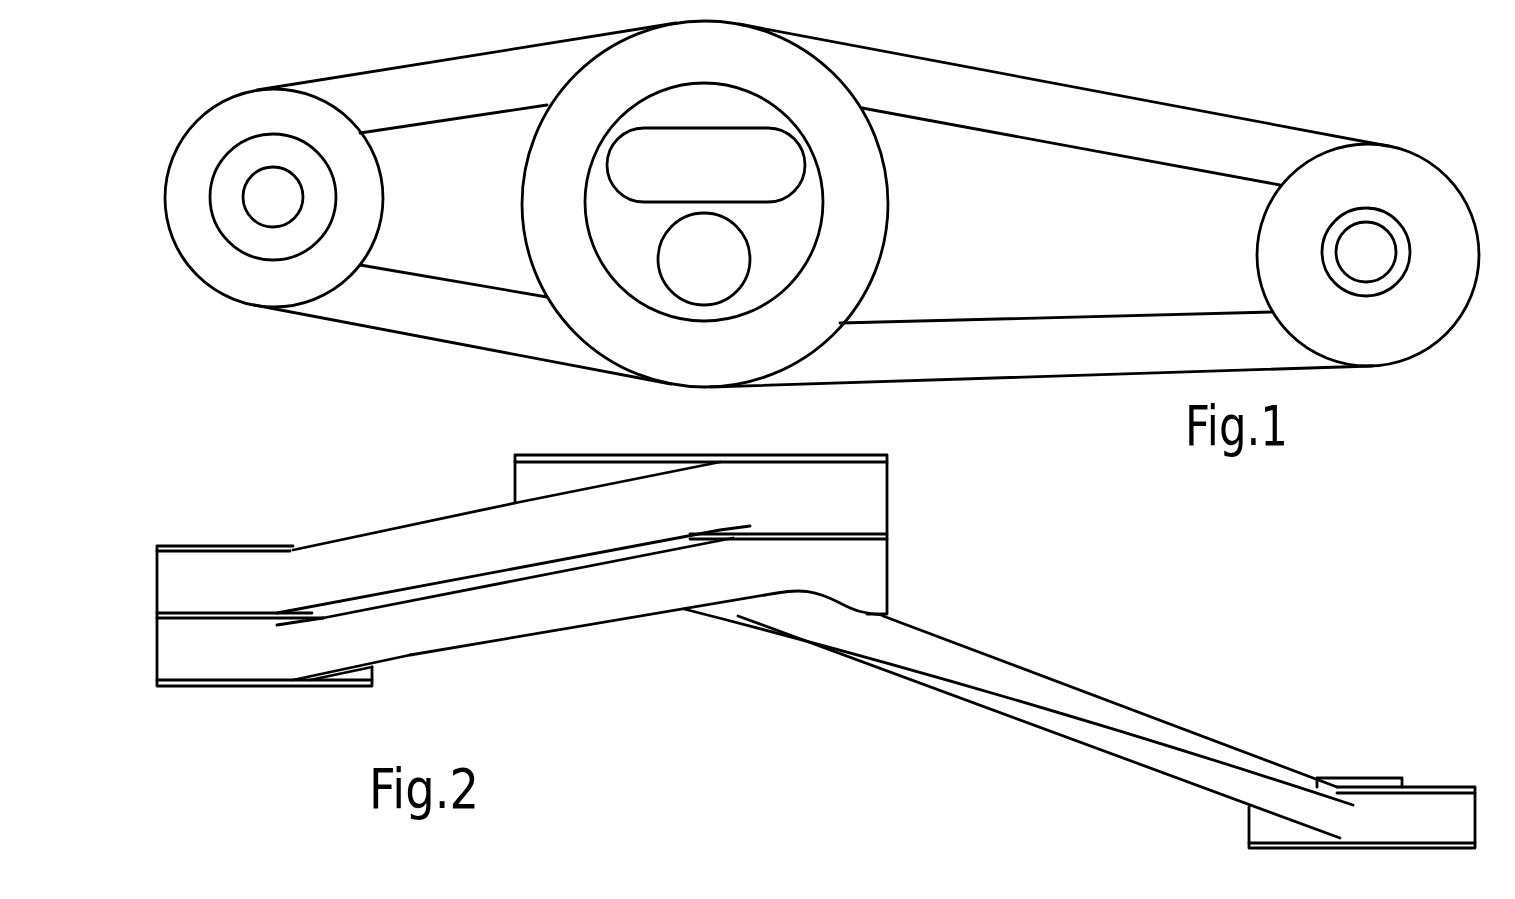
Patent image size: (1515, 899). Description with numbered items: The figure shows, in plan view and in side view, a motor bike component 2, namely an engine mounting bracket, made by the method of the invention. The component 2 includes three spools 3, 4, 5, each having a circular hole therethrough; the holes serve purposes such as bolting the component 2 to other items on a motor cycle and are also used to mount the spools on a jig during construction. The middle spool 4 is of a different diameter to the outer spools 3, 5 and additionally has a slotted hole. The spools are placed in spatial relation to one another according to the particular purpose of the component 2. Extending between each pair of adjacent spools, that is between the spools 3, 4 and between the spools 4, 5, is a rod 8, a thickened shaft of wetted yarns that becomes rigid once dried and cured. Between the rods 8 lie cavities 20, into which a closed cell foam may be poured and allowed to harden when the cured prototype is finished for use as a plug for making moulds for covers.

In FIG. 1, the motor bike component 2 is at (453, 52).
In FIG. 2, the motor bike component 2 is at (359, 502).
In FIG. 1, the outer spool 3 is at (223, 100).
In FIG. 2, the outer spool 3 is at (211, 557).
In FIG. 1, the middle spool 4 is at (788, 70).
In FIG. 2, the middle spool 4 is at (862, 456).
In FIG. 1, the outer spool 5 is at (1347, 173).
In FIG. 2, the outer spool 5 is at (1410, 782).
In FIG. 1, the rod 8 is at (355, 95).
In FIG. 2, the rod 8 is at (507, 620).
In FIG. 1, the cavity 20 is at (747, 183).